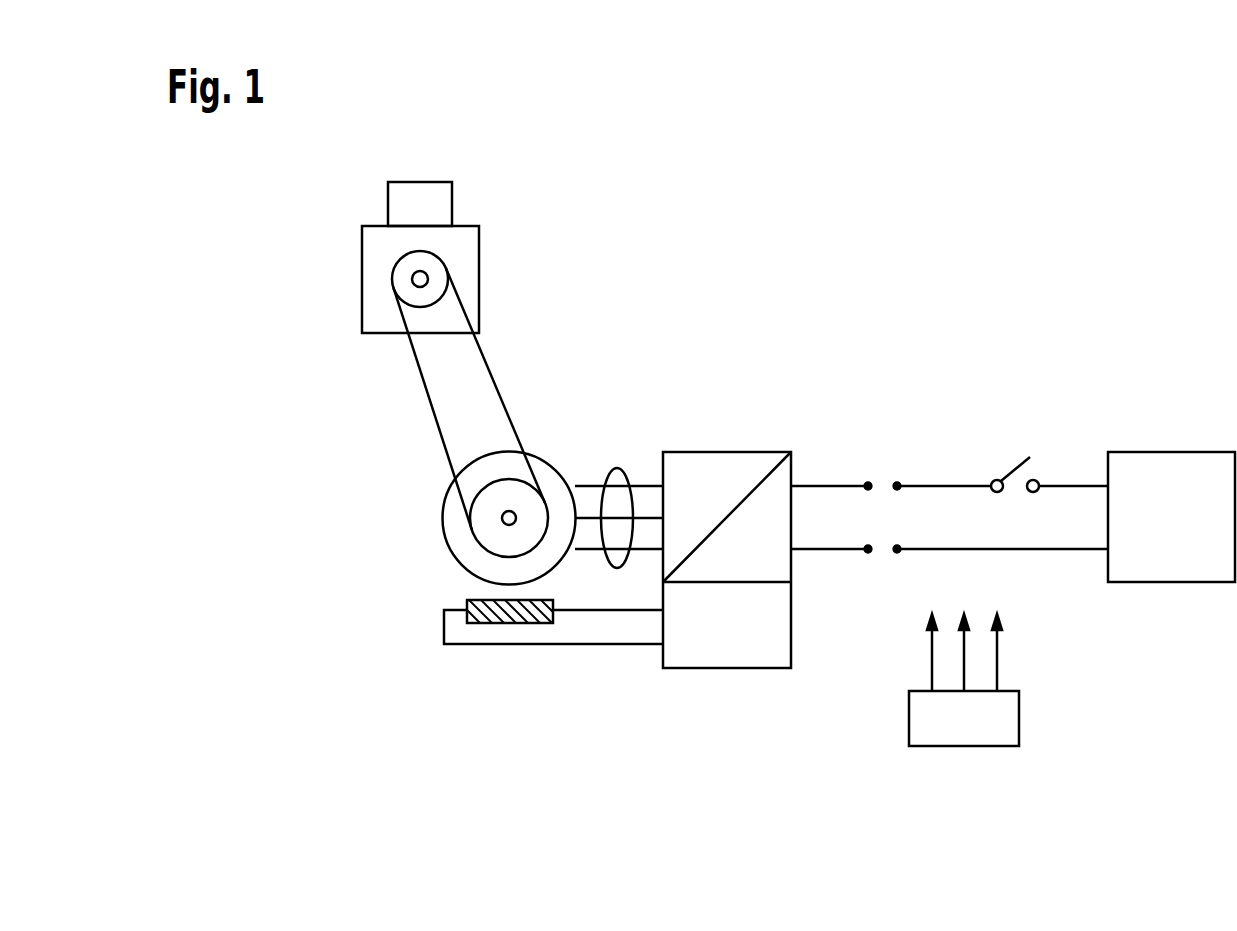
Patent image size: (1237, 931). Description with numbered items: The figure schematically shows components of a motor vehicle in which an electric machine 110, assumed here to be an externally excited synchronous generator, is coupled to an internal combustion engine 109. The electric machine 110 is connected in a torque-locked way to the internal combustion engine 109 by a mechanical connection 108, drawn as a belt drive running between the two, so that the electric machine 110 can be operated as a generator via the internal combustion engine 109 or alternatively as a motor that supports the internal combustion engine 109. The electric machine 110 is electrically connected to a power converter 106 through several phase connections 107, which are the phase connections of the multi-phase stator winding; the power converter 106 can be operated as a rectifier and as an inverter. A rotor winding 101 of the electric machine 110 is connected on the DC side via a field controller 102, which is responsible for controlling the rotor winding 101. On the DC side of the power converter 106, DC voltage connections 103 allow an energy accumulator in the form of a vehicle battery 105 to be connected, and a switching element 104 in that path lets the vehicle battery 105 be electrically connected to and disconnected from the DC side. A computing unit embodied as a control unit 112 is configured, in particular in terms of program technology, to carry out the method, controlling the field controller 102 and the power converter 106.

The rotor winding 101 is at (467, 600).
The field controller 102 is at (727, 568).
The DC voltage connections 103 is at (868, 482).
The switching element 104 is at (1016, 468).
The vehicle battery 105 is at (1170, 452).
The power converter 106 is at (716, 452).
The phase connections 107 is at (617, 468).
The mechanical connection 108 is at (435, 423).
The internal combustion engine 109 is at (479, 256).
The electric machine 110 is at (443, 507).
The control unit 112 is at (1019, 715).